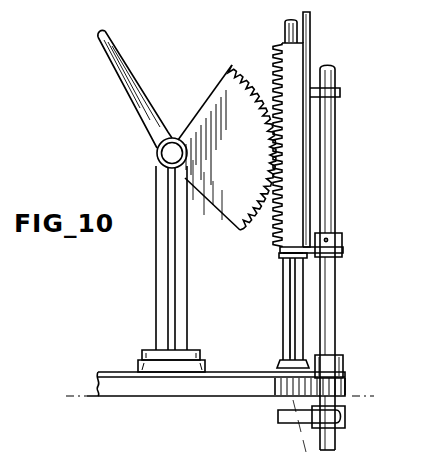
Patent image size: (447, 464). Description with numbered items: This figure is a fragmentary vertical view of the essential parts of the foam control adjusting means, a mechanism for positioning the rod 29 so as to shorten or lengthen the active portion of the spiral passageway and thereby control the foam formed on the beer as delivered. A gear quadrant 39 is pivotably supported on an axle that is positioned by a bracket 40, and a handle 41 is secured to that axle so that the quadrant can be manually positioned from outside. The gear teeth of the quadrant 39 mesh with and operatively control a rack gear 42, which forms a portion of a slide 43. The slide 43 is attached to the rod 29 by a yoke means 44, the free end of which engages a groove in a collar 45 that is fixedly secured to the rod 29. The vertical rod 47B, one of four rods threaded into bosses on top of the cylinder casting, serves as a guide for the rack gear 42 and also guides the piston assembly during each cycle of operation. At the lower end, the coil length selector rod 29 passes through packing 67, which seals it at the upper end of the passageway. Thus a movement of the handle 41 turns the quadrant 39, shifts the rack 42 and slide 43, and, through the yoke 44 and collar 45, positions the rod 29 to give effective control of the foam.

The rod 29 is at (327, 302).
The gear quadrant 39 is at (254, 166).
The bracket 40 is at (158, 277).
The handle 41 is at (136, 92).
The rack gear 42 is at (273, 236).
The slide 43 is at (290, 53).
The yoke means 44 is at (283, 256).
The collar 45 is at (343, 250).
The rod 47B is at (290, 318).
The packing 67 is at (343, 367).